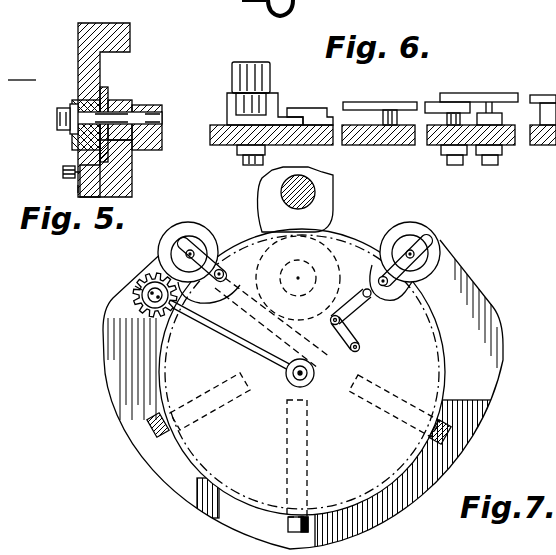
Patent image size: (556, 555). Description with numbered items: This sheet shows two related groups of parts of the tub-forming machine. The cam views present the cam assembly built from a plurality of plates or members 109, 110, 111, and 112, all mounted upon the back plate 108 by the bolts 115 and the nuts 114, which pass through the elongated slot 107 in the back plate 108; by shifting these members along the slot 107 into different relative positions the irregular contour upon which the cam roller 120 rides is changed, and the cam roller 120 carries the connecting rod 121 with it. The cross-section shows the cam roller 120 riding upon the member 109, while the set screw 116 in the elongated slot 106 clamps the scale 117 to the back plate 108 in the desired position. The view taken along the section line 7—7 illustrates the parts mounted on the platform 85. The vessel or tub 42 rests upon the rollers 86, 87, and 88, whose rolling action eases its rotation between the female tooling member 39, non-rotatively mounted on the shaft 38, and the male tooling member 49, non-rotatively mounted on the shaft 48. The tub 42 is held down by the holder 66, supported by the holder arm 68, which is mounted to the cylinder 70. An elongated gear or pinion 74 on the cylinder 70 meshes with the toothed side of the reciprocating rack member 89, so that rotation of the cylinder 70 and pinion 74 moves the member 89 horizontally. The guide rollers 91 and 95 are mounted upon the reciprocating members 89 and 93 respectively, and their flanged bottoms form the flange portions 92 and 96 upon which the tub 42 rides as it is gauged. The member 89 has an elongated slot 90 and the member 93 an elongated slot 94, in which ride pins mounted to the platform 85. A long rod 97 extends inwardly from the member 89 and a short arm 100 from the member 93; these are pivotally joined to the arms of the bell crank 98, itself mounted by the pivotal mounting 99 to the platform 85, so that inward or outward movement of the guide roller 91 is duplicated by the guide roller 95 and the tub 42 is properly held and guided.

In FIG. 5, the section line 7 is at (22, 76).
In FIG. 7, the shaft 38 is at (298, 288).
In FIG. 7, the female tooling member 39 is at (328, 243).
In FIG. 7, the vessel or tub 42 is at (250, 503).
In FIG. 7, the shaft 48 is at (312, 190).
In FIG. 7, the male tooling member 49 is at (330, 210).
In FIG. 7, the holder 66 is at (293, 380).
In FIG. 7, the holder arm 68 is at (236, 345).
In FIG. 7, the cylinder 70 is at (144, 304).
In FIG. 7, the elongated gear or pinion 74 is at (150, 283).
In FIG. 7, the platform 85 is at (126, 398).
In FIG. 7, the roller 86 is at (165, 440).
In FIG. 7, the roller 87 is at (309, 525).
In FIG. 7, the roller 88 is at (442, 440).
In FIG. 7, the reciprocating rack member 89 is at (156, 258).
In FIG. 7, the elongated slot 90 is at (226, 274).
In FIG. 7, the guide roller 91 is at (193, 236).
In FIG. 7, the flange portion 92 is at (217, 231).
In FIG. 7, the reciprocating member 93 is at (413, 287).
In FIG. 7, the elongated slot 94 is at (370, 263).
In FIG. 7, the guide roller 95 is at (432, 254).
In FIG. 7, the flange portion 96 is at (452, 216).
In FIG. 7, the long rod 97 is at (280, 318).
In FIG. 7, the bell crank 98 is at (345, 330).
In FIG. 7, the pivotal mounting 99 is at (360, 348).
In FIG. 7, the short arm 100 is at (364, 308).
In FIG. 5, the elongated slot 106 is at (95, 196).
In FIG. 5, the elongated slot 107 is at (85, 100).
In FIG. 5, the back plate 108 is at (78, 42).
In FIG. 6, the back plate 108 is at (218, 146).
In FIG. 5, the cam member 109 is at (106, 88).
In FIG. 6, the cam member 109 is at (227, 103).
In FIG. 6, the cam member 110 is at (330, 113).
In FIG. 6, the cam member 111 is at (395, 102).
In FIG. 6, the cam member 112 is at (512, 85).
In FIG. 5, the nut 114 is at (70, 131).
In FIG. 6, the nut 114 is at (265, 150).
In FIG. 5, the bolt 115 is at (57, 118).
In FIG. 6, the bolt 115 is at (246, 165).
In FIG. 5, the set screw 116 is at (65, 170).
In FIG. 5, the scale 117 is at (78, 189).
In FIG. 5, the cam roller 120 is at (118, 100).
In FIG. 6, the cam roller 120 is at (262, 95).
In FIG. 5, the connecting rod 121 is at (142, 106).
In FIG. 6, the connecting rod 121 is at (267, 68).